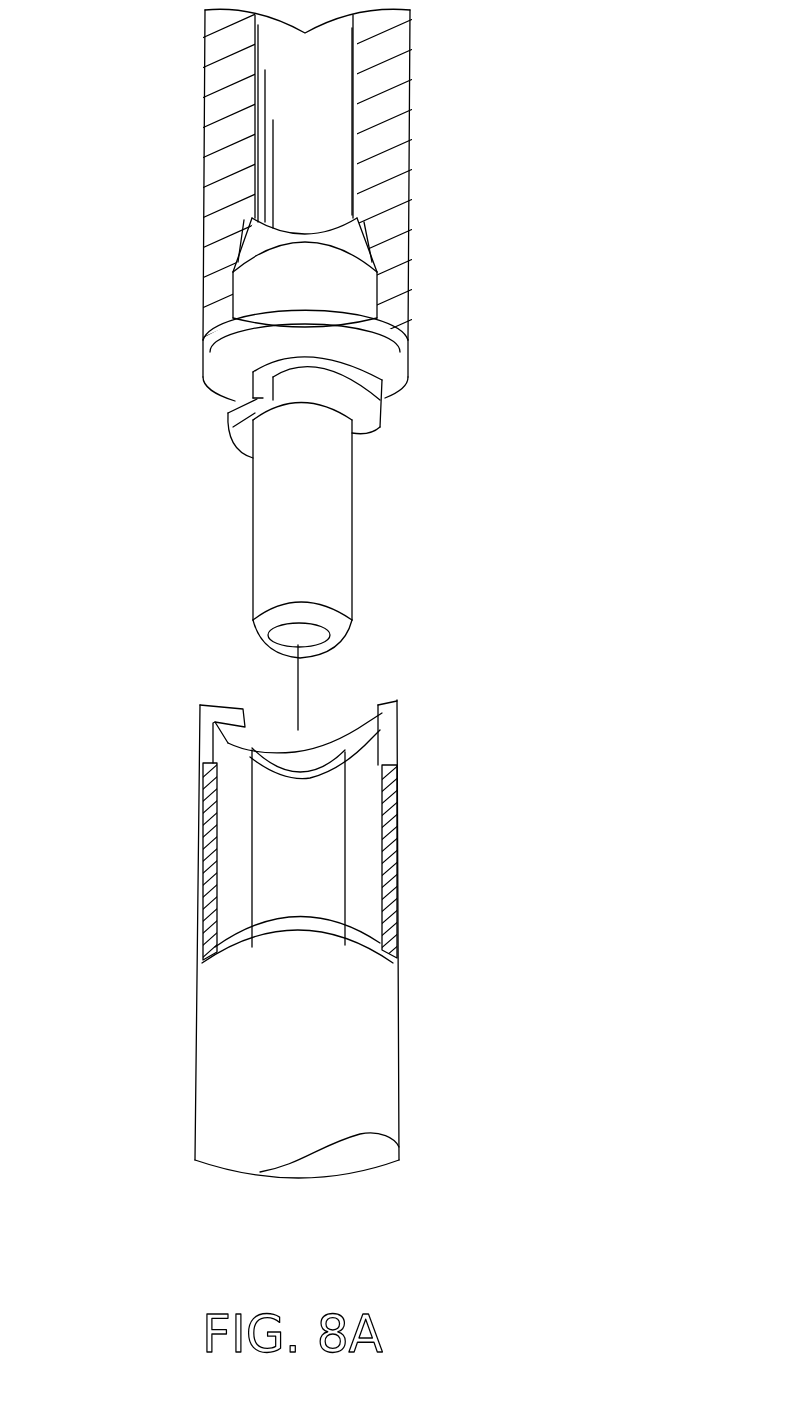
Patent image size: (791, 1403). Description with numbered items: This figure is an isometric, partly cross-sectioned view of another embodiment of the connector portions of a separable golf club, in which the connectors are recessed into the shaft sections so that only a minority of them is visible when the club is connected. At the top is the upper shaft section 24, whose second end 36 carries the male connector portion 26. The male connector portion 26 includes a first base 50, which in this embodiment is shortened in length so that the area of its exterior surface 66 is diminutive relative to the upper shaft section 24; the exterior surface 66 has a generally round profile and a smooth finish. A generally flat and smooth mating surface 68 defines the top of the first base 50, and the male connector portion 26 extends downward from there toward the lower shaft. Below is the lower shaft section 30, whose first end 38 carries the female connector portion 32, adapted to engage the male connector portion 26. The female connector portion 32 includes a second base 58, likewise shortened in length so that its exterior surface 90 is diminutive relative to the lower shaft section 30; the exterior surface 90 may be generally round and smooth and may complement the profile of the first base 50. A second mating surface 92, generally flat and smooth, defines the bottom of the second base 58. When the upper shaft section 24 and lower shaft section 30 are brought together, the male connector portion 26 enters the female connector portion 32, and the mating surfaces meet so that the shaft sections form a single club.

The upper shaft section 24 is at (432, 33).
The second end 36 is at (390, 297).
The exterior surface 66 is at (248, 325).
The first base 50 is at (225, 338).
The mating surface 68 is at (405, 377).
The male connector portion 26 is at (186, 423).
The second mating surface 92 is at (235, 705).
The female connector portion 32 is at (193, 710).
The second base 58 is at (200, 735).
The exterior surface 90 is at (197, 760).
The first end 38 is at (390, 790).
The lower shaft section 30 is at (425, 977).